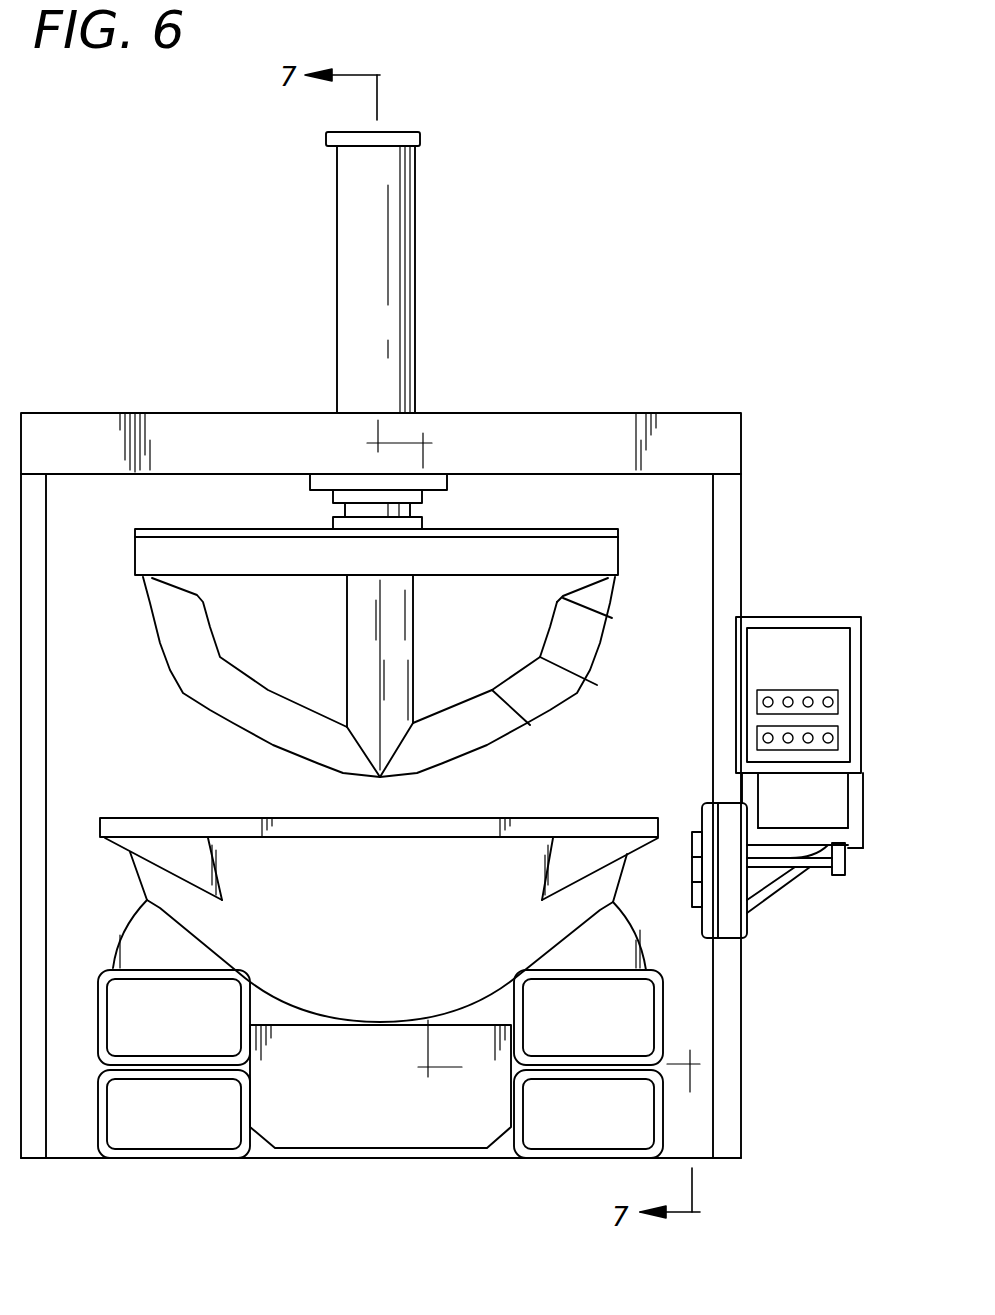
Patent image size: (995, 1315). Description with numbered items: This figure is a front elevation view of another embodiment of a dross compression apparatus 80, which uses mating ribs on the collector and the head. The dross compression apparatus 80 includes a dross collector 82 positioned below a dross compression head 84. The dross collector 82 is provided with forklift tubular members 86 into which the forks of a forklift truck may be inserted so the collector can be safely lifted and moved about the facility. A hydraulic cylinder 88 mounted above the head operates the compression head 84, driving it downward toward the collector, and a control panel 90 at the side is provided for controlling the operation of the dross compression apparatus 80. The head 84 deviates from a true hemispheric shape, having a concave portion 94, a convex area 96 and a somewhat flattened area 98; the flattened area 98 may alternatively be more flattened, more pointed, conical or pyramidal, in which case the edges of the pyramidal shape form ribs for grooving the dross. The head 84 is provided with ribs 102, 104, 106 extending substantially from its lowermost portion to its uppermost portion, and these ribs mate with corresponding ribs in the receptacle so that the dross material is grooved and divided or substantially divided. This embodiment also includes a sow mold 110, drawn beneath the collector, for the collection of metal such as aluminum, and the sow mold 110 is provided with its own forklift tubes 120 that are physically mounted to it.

The dross compression apparatus 80 is at (576, 410).
The dross collector 82 is at (137, 805).
The dross compression head 84 is at (370, 643).
The forklift tubular members 86 is at (100, 1013).
The hydraulic cylinder 88 is at (416, 284).
The control panel 90 is at (787, 617).
The concave portion 94 is at (612, 618).
The convex area 96 is at (597, 685).
The flattened area 98 is at (530, 725).
The rib 102 is at (397, 757).
The rib 104 is at (285, 752).
The rib 106 is at (483, 748).
The sow mold 110 is at (360, 1150).
The forklift tubes 120 is at (140, 1163).